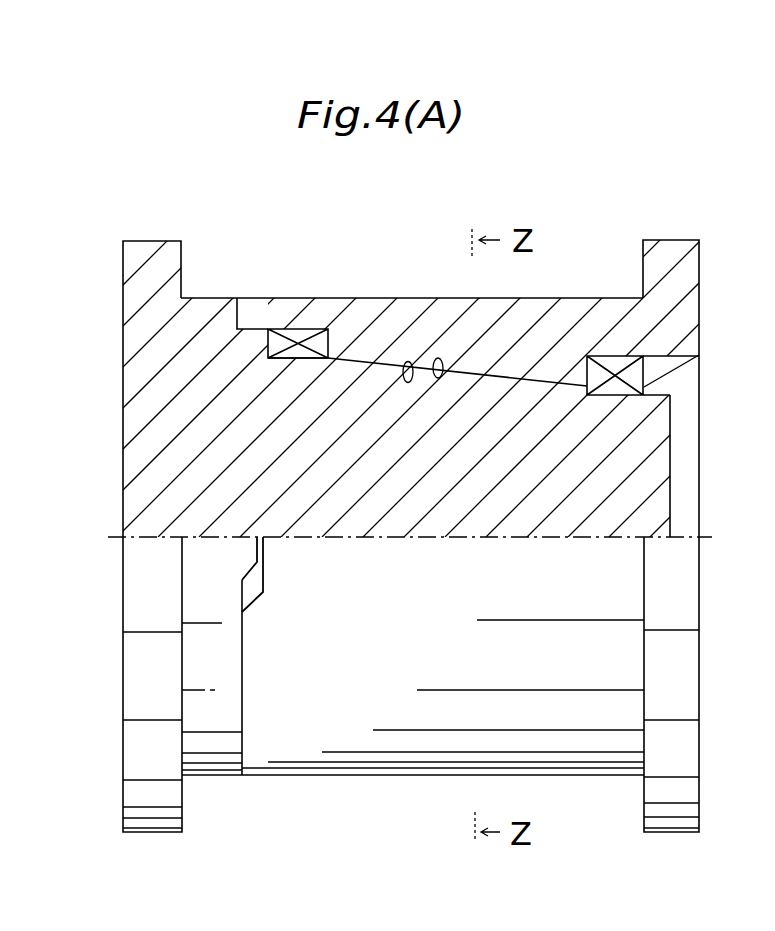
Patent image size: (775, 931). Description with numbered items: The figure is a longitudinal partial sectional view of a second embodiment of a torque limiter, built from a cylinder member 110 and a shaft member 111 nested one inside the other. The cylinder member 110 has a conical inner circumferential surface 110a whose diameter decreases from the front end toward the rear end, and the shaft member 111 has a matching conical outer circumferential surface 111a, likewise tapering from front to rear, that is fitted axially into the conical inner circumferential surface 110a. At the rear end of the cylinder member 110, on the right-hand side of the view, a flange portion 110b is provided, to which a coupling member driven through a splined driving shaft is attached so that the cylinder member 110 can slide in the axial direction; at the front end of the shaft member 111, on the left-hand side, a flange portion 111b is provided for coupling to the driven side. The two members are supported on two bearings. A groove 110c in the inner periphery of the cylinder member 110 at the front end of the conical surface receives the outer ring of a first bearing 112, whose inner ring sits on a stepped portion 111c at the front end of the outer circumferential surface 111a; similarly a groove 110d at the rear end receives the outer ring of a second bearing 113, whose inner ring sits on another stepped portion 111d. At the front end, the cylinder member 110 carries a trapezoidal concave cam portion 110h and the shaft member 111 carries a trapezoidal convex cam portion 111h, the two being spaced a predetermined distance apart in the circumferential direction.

The cylinder member 110 is at (362, 298).
The conical inner circumferential surface 110a is at (411, 362).
The flange portion 110b is at (690, 260).
The groove 110c is at (316, 345).
The groove 110d is at (708, 361).
The concave cam portion 110h is at (263, 587).
The shaft member 111 is at (347, 515).
The conical outer circumferential surface 111a is at (439, 378).
The flange portion 111b is at (143, 257).
The stepped portion 111c is at (300, 358).
The stepped portion 111d is at (613, 397).
The convex cam portion 111h is at (257, 552).
The first bearing 112 is at (290, 333).
The second bearing 113 is at (615, 367).